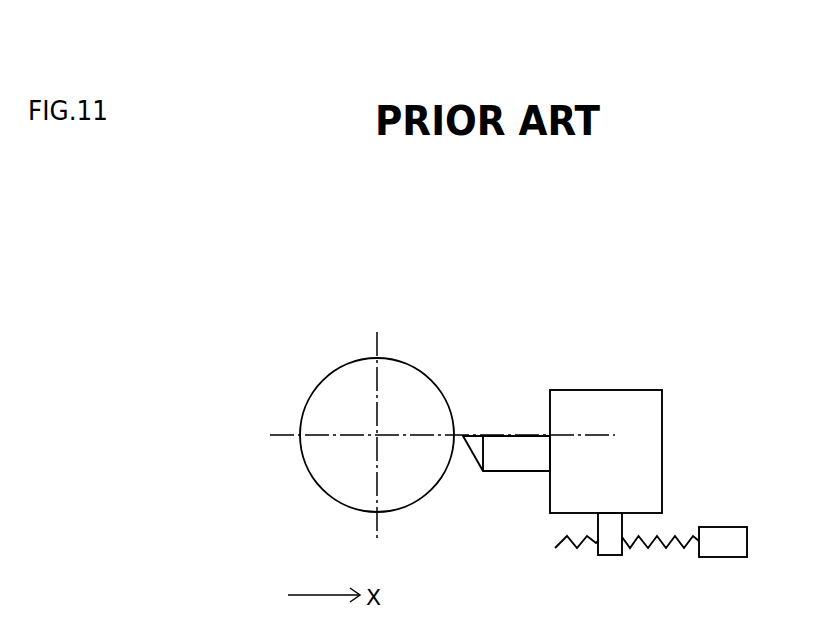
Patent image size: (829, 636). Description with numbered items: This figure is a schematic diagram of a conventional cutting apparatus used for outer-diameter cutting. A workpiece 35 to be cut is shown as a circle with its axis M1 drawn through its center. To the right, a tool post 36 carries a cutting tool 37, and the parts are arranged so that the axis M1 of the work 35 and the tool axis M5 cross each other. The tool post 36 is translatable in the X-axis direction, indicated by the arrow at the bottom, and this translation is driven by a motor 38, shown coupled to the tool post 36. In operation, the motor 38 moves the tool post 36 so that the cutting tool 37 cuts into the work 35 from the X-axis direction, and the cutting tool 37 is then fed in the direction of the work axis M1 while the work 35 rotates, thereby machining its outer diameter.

The workpiece 35 is at (421, 372).
The axis of the work M1 is at (377, 435).
The tool post 36 is at (638, 389).
The cutting tool 37 is at (510, 434).
The tool axis M5 is at (571, 435).
The motor 38 is at (730, 527).